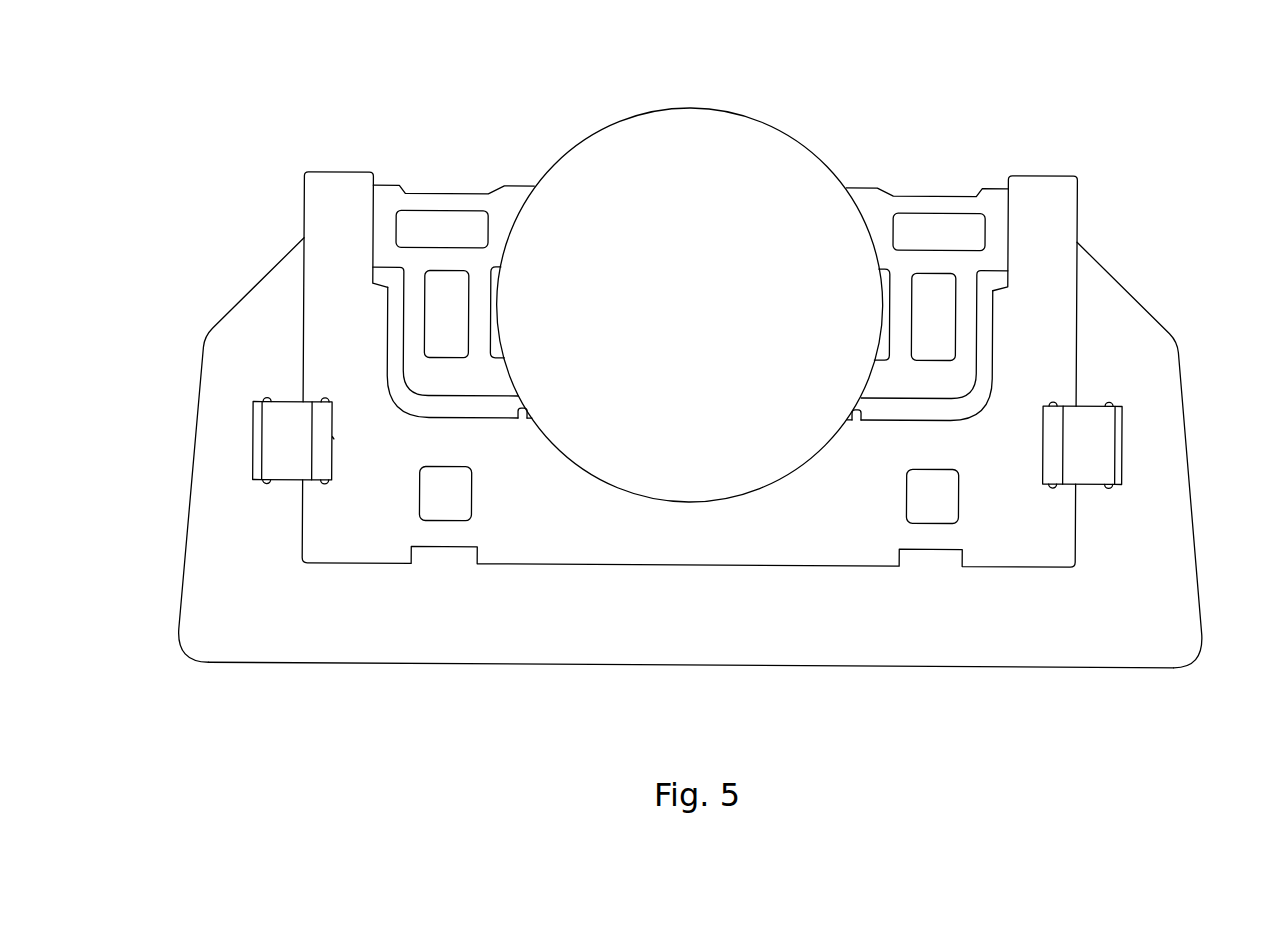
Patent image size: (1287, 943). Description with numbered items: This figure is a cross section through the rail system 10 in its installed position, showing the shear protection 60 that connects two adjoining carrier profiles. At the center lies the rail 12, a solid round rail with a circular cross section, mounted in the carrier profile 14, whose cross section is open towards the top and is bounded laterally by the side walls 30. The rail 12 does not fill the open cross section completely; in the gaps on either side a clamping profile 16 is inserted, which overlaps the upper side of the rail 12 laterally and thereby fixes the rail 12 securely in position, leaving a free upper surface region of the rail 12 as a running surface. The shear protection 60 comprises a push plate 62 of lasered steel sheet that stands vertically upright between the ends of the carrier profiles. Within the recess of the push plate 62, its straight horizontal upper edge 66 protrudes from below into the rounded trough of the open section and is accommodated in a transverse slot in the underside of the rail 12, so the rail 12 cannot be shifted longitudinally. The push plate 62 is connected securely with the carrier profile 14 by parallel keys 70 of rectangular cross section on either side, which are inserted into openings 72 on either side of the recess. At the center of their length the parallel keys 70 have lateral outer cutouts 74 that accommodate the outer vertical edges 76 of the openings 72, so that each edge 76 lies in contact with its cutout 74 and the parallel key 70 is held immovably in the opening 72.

The rail system 10 is at (238, 108).
The rail 12 is at (688, 125).
The carrier profile 14 is at (818, 530).
The clamping profile 16 is at (467, 178).
The side walls 30 is at (323, 222).
The shear protection 60 is at (178, 358).
The push plate 62 is at (467, 640).
The upper edge 66 is at (524, 417).
The parallel keys 70 is at (287, 452).
The openings 72 is at (288, 398).
The cutouts 74 is at (313, 489).
The outer vertical edges 76 is at (250, 443).